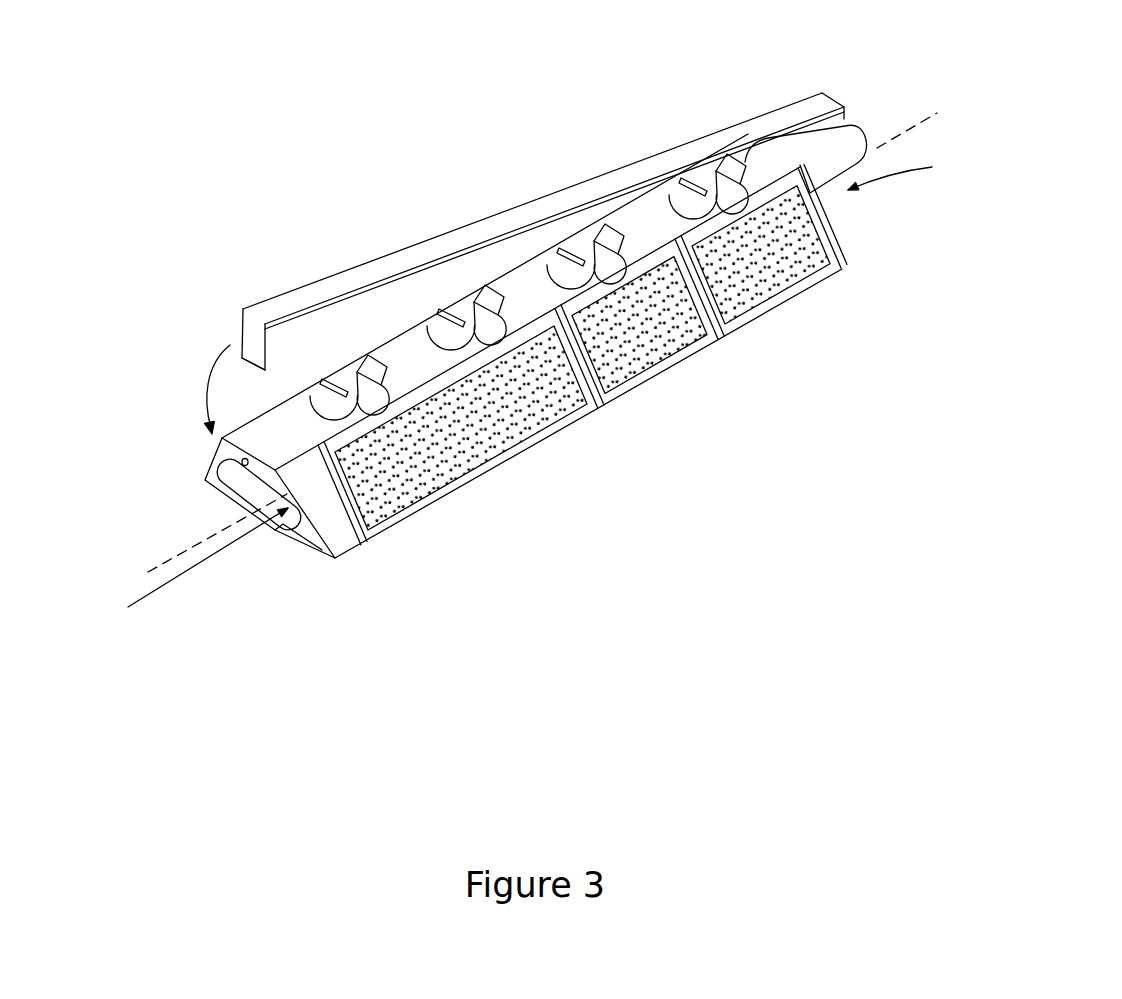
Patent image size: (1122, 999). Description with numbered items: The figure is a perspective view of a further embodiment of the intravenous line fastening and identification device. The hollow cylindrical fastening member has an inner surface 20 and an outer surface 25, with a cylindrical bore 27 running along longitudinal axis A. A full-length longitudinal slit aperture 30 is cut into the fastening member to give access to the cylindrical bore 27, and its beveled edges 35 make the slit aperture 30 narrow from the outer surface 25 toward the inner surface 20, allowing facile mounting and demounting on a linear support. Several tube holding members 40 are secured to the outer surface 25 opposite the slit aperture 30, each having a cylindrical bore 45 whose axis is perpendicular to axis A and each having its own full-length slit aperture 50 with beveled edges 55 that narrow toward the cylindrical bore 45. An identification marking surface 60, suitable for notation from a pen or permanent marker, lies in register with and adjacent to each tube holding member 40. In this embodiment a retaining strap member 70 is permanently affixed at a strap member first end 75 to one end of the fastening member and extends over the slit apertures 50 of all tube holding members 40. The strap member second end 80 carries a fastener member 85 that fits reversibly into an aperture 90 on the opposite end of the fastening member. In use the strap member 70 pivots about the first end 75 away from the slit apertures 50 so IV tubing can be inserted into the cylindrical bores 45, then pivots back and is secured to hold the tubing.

The inner surface 20 is at (250, 487).
The outer surface 25 is at (337, 560).
The cylindrical bore 27 is at (527, 391).
The longitudinal slit aperture 30 is at (302, 553).
The beveled edges 35 is at (292, 535).
The tube holding member 40 is at (403, 360).
The cylindrical bore 45 is at (338, 418).
The longitudinal slit aperture 50 is at (343, 368).
The beveled edges 55 is at (370, 366).
The identification marking surface 60 is at (452, 460).
The retaining strap member 70 is at (347, 285).
The strap member first end 75 is at (847, 123).
The strap member second end 80 is at (248, 345).
The fastener member 85 is at (274, 374).
The aperture 90 is at (243, 462).